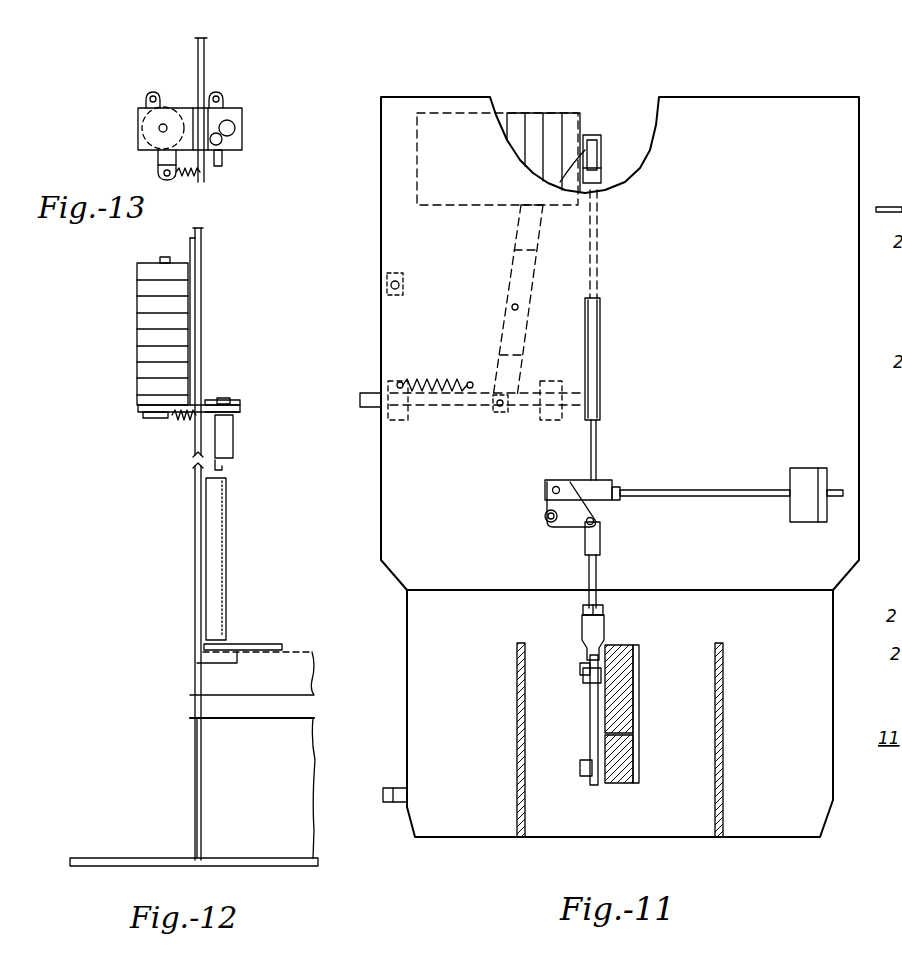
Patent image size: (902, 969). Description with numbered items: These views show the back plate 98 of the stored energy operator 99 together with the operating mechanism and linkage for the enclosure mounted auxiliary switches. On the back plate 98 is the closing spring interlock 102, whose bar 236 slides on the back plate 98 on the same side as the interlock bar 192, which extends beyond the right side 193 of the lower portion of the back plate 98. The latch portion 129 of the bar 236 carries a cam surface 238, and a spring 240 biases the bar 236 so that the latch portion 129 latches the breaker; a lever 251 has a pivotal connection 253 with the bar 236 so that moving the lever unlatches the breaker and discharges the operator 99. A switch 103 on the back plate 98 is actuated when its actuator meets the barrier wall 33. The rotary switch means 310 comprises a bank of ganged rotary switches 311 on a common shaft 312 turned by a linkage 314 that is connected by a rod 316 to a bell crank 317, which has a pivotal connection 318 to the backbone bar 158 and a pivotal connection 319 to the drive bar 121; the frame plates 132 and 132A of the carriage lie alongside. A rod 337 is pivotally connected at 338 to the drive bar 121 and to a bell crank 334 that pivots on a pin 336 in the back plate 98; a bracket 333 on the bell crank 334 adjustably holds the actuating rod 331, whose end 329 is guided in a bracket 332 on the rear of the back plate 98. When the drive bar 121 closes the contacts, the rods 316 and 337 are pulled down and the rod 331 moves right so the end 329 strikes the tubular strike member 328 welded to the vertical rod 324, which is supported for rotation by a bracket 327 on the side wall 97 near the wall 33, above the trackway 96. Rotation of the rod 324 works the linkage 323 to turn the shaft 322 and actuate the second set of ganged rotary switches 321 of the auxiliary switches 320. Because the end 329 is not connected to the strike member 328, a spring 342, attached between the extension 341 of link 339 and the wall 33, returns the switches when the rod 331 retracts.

In FIG. 13, the barrier wall 33 is at (206, 54).
In FIG. 12, the barrier wall 33 is at (193, 511).
In FIG. 12, the trackway 96 is at (305, 718).
In FIG. 12, the side wall 97 is at (314, 672).
In FIG. 11, the back plate 98 is at (860, 136).
In FIG. 11, the stored energy operator 99 is at (887, 576).
In FIG. 11, the closing spring interlock 102 is at (380, 392).
In FIG. 11, the switch 103 is at (386, 280).
In FIG. 11, the drive bar 121 is at (640, 761).
In FIG. 11, the latch portion 129 is at (380, 408).
In FIG. 11, the frame plate 132 is at (723, 722).
In FIG. 11, the frame plate 132A is at (516, 742).
In FIG. 11, the backbone bar 158 is at (640, 670).
In FIG. 11, the interlock bar 192 is at (398, 788).
In FIG. 11, the right side 193 is at (407, 736).
In FIG. 11, the bar 236 is at (458, 410).
In FIG. 11, the cam surface 238 is at (360, 400).
In FIG. 11, the spring 240 is at (447, 382).
In FIG. 11, the lever 251 is at (510, 286).
In FIG. 11, the pivotal connection 253 is at (505, 414).
In FIG. 11, the rotary switch means 310 is at (552, 114).
In FIG. 11, the ganged rotary switches 311 is at (513, 120).
In FIG. 11, the shaft 312 is at (560, 183).
In FIG. 11, the linkage 314 is at (600, 136).
In FIG. 11, the rod 316 is at (600, 252).
In FIG. 11, the bell crank 317 is at (590, 720).
In FIG. 11, the pivotal connection 318 is at (585, 682).
In FIG. 11, the pivotal connection 319 is at (582, 768).
In FIG. 13, the auxiliary switches 320 is at (135, 116).
In FIG. 12, the auxiliary switches 320 is at (135, 292).
In FIG. 13, the ganged rotary switches 321 is at (156, 153).
In FIG. 12, the ganged rotary switches 321 is at (145, 345).
In FIG. 13, the shaft 322 is at (158, 128).
In FIG. 12, the shaft 322 is at (162, 257).
In FIG. 13, the linkage 323 is at (220, 94).
In FIG. 12, the linkage 323 is at (176, 421).
In FIG. 13, the vertical rod 324 is at (233, 126).
In FIG. 12, the vertical rod 324 is at (226, 453).
In FIG. 12, the bracket 327 is at (252, 644).
In FIG. 13, the tubular strike member 328 is at (240, 141).
In FIG. 12, the tubular strike member 328 is at (215, 543).
In FIG. 13, the end 329 is at (224, 162).
In FIG. 11, the end 329 is at (845, 493).
In FIG. 11, the actuating rod 331 is at (715, 490).
In FIG. 11, the bracket 332 is at (808, 468).
In FIG. 11, the bracket 333 is at (572, 480).
In FIG. 11, the bell crank 334 is at (572, 528).
In FIG. 11, the pin 336 is at (545, 517).
In FIG. 11, the rod 337 is at (598, 580).
In FIG. 11, the pivotal connection 338 is at (583, 668).
In FIG. 13, the link 339 is at (147, 97).
In FIG. 13, the extension 341 is at (156, 166).
In FIG. 12, the extension 341 is at (150, 419).
In FIG. 13, the spring 342 is at (194, 180).
In FIG. 12, the spring 342 is at (181, 422).